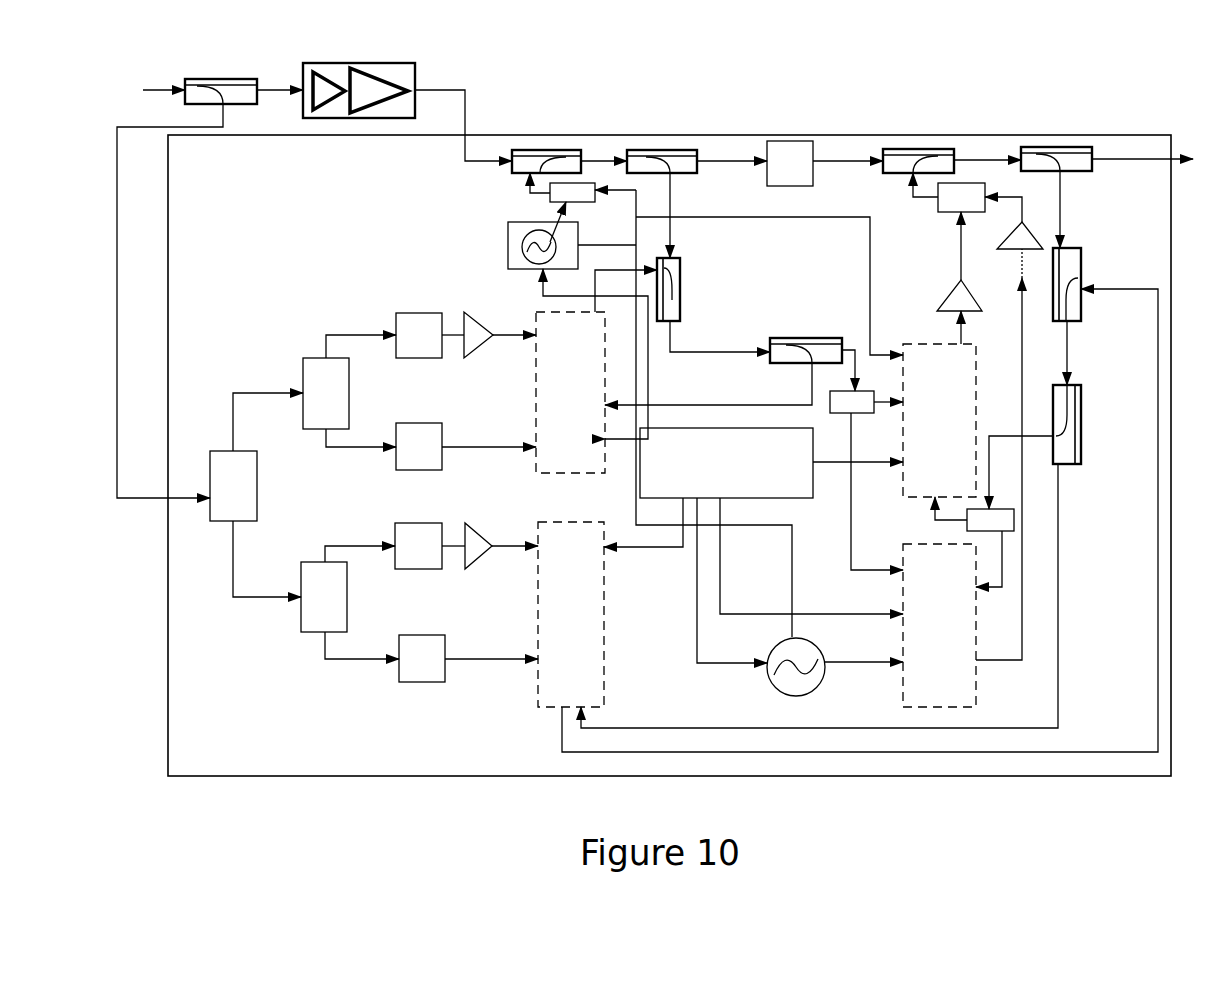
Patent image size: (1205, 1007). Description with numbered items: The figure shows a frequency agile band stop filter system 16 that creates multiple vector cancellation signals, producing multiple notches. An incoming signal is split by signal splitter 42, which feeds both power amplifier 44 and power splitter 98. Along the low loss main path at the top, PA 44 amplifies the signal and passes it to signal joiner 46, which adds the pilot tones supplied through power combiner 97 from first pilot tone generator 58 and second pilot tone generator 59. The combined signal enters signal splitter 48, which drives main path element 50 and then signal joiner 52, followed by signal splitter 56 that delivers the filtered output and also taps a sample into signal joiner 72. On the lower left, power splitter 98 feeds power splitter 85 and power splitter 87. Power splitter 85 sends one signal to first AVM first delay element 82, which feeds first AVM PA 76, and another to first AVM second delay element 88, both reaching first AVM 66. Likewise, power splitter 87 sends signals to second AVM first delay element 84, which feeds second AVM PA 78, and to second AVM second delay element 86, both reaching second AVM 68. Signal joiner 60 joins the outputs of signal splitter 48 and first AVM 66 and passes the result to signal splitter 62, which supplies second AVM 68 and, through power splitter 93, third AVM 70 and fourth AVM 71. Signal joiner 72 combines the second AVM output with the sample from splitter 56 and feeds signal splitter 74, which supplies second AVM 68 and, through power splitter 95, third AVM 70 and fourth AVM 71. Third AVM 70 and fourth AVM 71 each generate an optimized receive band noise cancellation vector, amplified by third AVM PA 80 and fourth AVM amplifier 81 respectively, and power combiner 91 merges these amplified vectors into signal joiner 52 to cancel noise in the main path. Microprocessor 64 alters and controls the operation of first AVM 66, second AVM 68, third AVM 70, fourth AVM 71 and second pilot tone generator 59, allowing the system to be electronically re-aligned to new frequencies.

The frequency agile band stop filter system 16 is at (1162, 135).
The signal splitter 42 is at (220, 79).
The power amplifier 44 is at (408, 63).
The signal joiner 46 is at (542, 150).
The signal splitter 48 is at (660, 150).
The main path element 50 is at (778, 141).
The signal joiner 52 is at (918, 149).
The signal splitter 56 is at (1048, 147).
The first pilot tone generator 58 is at (508, 240).
The second pilot tone generator 59 is at (776, 690).
The signal joiner 60 is at (681, 290).
The signal splitter 62 is at (780, 338).
The microprocessor 64 is at (726, 463).
The first adaptive vector modulator 66 is at (570, 392).
The second adaptive vector modulator 68 is at (571, 614).
The third adaptive vector modulator 70 is at (939, 420).
The fourth adaptive vector modulator 71 is at (939, 625).
The signal joiner 72 is at (1083, 264).
The signal splitter 74 is at (1083, 426).
The first AVM power amplifier 76 is at (480, 320).
The second AVM power amplifier 78 is at (480, 526).
The third AVM power amplifier 80 is at (944, 300).
The fourth AVM amplifier 81 is at (1004, 240).
The first AVM first delay element 82 is at (420, 313).
The second AVM first delay element 84 is at (438, 523).
The power splitter 85 is at (326, 393).
The second AVM second delay element 86 is at (422, 635).
The power splitter 87 is at (324, 597).
The first AVM second delay element 88 is at (416, 423).
The power combiner 91 is at (961, 197).
The power splitter 93 is at (852, 402).
The power splitter 95 is at (990, 520).
The power combiner 97 is at (572, 193).
The power splitter 98 is at (233, 486).